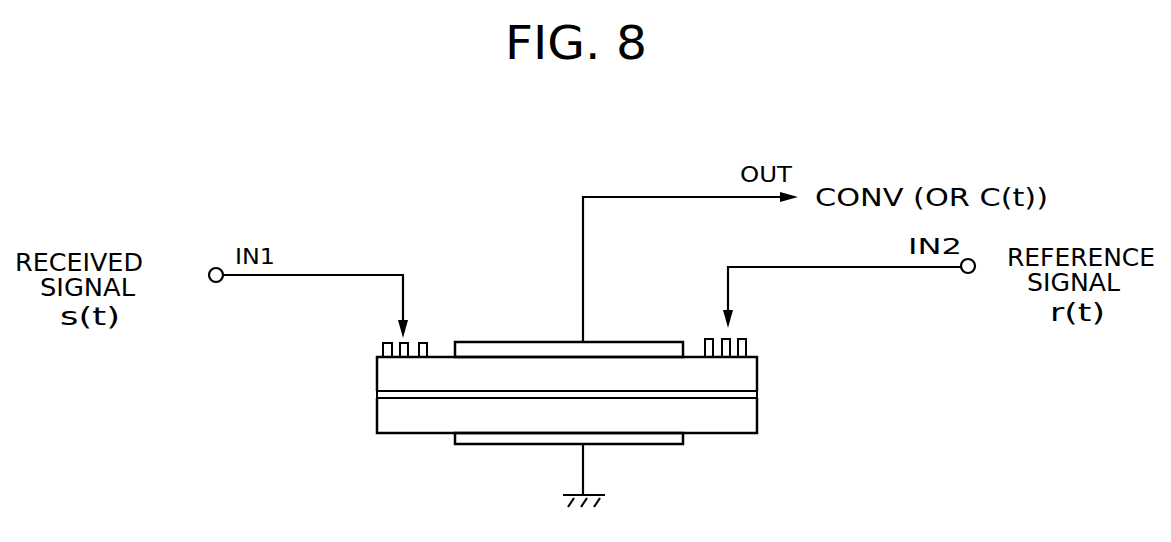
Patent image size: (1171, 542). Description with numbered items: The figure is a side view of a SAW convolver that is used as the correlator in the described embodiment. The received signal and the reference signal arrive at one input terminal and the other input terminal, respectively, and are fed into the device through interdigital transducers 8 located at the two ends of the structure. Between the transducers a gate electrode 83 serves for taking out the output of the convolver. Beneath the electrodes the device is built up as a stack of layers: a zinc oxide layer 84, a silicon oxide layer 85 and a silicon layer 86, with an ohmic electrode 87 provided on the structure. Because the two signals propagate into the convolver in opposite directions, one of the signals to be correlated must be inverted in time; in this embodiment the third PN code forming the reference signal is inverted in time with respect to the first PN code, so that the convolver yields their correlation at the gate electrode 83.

The interdigital transducer 8 is at (388, 343).
The gate electrode 83 is at (632, 342).
The zinc oxide layer 84 is at (757, 364).
The silicon oxide layer 85 is at (377, 393).
The silicon layer 86 is at (757, 415).
The ohmic electrode 87 is at (665, 444).